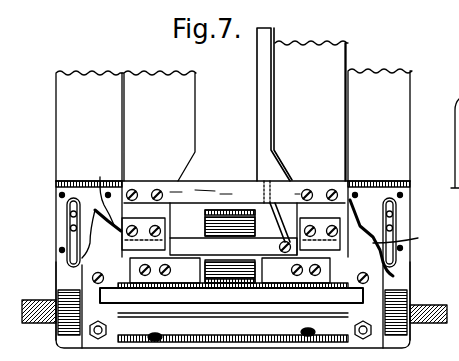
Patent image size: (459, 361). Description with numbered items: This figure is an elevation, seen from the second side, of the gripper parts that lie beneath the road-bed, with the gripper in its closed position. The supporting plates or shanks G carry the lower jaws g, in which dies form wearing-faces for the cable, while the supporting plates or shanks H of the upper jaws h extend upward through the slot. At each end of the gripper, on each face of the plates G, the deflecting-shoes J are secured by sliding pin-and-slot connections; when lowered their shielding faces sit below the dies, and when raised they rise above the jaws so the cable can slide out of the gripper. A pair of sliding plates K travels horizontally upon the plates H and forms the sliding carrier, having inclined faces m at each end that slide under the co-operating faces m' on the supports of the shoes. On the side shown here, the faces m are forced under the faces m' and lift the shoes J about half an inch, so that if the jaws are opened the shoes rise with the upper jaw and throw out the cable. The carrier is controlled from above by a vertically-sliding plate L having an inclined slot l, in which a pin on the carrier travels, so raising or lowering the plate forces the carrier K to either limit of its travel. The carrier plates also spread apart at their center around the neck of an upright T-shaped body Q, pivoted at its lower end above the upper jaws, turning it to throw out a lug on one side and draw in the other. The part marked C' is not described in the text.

The supporting plates or shanks G is at (234, 204).
The supporting plates or shanks H is at (235, 111).
The vertically-sliding plate L is at (260, 104).
The inclined slot l is at (264, 181).
The inclined faces m is at (267, 241).
The inclined faces m' is at (267, 202).
The deflecting-shoes J is at (58, 270).
The upright T-shaped body Q is at (206, 228).
The connecting arm C' is at (278, 229).
The sliding plates K is at (233, 246).
The upper jaws h is at (231, 296).
The lower jaws g is at (234, 305).